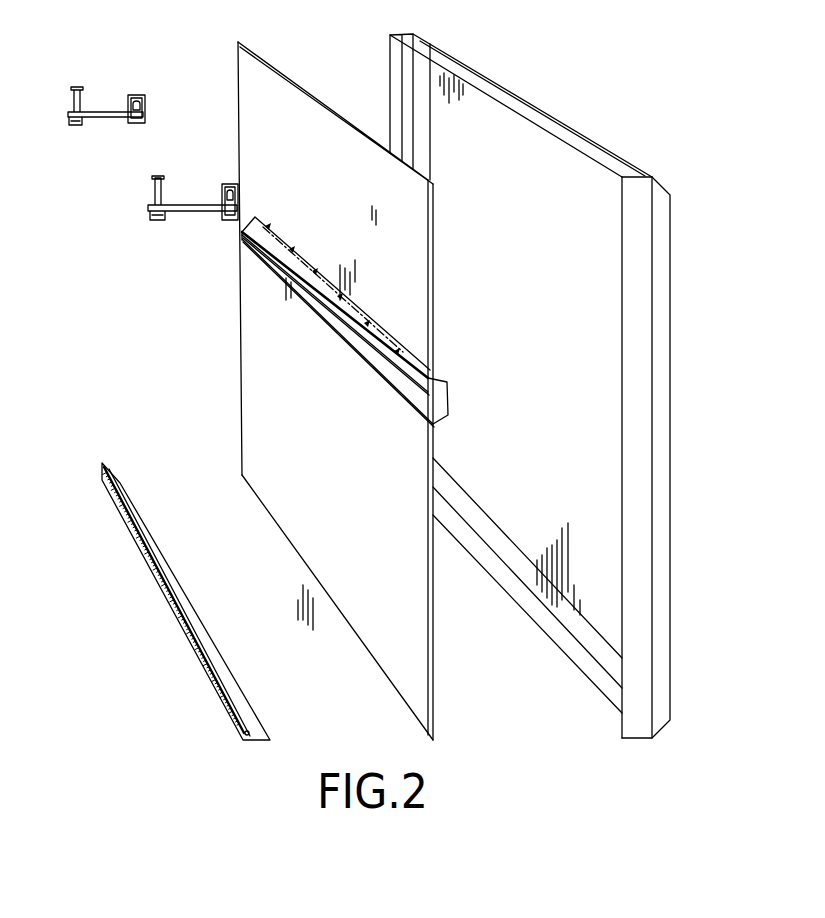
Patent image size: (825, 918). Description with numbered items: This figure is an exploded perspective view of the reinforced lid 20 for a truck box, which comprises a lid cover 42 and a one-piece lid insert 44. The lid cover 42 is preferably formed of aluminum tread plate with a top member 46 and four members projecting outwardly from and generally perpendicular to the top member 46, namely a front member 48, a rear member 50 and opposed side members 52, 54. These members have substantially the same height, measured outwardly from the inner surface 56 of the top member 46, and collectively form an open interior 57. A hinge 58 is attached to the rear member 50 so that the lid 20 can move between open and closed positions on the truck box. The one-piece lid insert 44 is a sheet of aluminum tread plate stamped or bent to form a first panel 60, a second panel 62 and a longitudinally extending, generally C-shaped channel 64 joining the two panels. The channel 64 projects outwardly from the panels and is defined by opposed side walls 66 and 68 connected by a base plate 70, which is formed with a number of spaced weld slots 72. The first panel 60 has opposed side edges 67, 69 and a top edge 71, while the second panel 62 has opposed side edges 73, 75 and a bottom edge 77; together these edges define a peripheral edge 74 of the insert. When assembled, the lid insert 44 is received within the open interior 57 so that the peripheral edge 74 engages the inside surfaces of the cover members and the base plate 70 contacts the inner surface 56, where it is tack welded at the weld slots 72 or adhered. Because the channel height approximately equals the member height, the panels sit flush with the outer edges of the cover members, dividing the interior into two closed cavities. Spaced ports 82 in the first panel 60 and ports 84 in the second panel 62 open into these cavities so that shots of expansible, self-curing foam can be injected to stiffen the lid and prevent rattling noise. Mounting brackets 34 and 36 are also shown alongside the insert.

The reinforced lid 20 is at (740, 108).
The first mounting bracket 34 is at (97, 123).
The second mounting bracket 36 is at (180, 217).
The lid cover 42 is at (710, 260).
The one-piece lid insert 44 is at (175, 62).
The top member 46 is at (668, 220).
The front member 48 is at (526, 108).
The rear member 50 is at (600, 692).
The side member 52 is at (390, 75).
The side member 54 is at (645, 405).
The inner surface 56 is at (573, 206).
The open interior 57 is at (512, 163).
The hinge 58 is at (162, 566).
The first panel 60 is at (259, 84).
The second panel 62 is at (410, 640).
The channel 64 is at (478, 414).
The side wall 66 is at (432, 378).
The side edge 67 is at (238, 118).
The side wall 68 is at (440, 421).
The side edge 69 is at (430, 250).
The base plate 70 is at (448, 398).
The top edge 71 is at (283, 72).
The weld slots 72 is at (275, 248).
The side edge 73 is at (236, 325).
The peripheral edge 74 is at (462, 707).
The side edge 75 is at (433, 653).
The bottom edge 77 is at (297, 562).
The ports 82 is at (300, 173).
The ports 84 is at (287, 411).